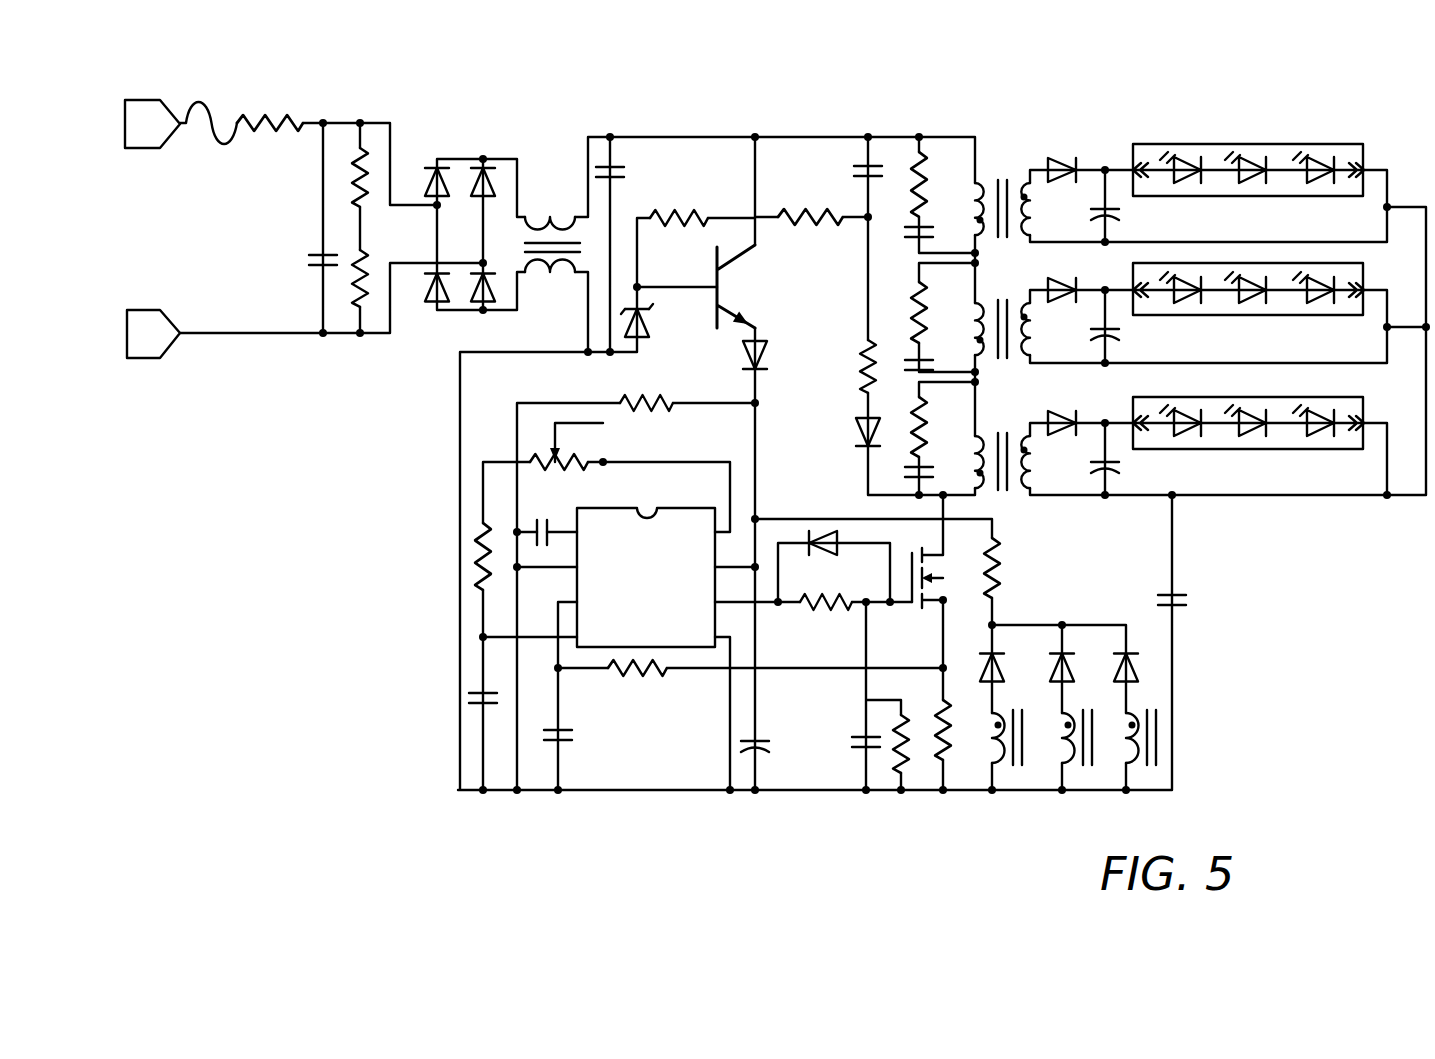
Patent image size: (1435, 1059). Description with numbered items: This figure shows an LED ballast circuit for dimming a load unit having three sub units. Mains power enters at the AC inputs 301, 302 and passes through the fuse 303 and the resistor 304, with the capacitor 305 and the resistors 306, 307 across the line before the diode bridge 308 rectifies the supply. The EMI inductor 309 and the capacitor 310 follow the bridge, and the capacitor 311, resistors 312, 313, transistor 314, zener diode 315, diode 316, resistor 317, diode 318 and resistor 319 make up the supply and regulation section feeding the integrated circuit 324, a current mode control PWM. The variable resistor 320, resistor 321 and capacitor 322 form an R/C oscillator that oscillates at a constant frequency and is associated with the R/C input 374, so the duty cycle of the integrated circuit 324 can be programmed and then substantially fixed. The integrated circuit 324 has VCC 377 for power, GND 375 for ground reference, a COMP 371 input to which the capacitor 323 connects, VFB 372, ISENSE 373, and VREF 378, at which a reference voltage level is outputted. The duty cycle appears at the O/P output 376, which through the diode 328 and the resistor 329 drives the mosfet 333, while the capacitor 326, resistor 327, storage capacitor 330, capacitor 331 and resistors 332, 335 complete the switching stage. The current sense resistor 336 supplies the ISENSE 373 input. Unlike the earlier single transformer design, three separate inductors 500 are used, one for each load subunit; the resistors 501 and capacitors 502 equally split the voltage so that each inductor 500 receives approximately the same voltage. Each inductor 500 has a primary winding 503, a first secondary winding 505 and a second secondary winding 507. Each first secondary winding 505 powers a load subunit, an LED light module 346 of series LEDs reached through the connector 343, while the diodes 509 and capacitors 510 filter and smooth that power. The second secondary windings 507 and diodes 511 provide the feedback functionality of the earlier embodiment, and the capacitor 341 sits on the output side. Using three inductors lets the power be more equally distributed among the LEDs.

The AC input 301 is at (148, 100).
The AC input 302 is at (150, 310).
The fuse 303 is at (205, 105).
The resistor 304 is at (262, 114).
The capacitor 305 is at (312, 258).
The resistor 306 is at (352, 170).
The resistor 307 is at (352, 300).
The diode bridge 308 is at (467, 158).
The EMI inductor 309 is at (550, 225).
The capacitor 310 is at (620, 172).
The capacitor 311 is at (863, 165).
The resistor 312 is at (675, 212).
The resistor 313 is at (830, 212).
The transistor 314 is at (725, 280).
The zener diode 315 is at (650, 322).
The diode 316 is at (768, 350).
The resistor 317 is at (863, 365).
The diode 318 is at (862, 437).
The resistor 319 is at (640, 400).
The variable resistor 320 is at (575, 455).
The resistor 321 is at (480, 545).
The capacitor 322 is at (468, 693).
The capacitor 323 is at (530, 520).
The integrated circuit 324 is at (710, 510).
The capacitor 326 is at (568, 735).
The resistor 327 is at (630, 672).
The diode 328 is at (818, 543).
The resistor 329 is at (805, 605).
The storage capacitor 330 is at (760, 740).
The capacitor 331 is at (860, 750).
The resistor 332 is at (905, 762).
The mosfet 333 is at (930, 560).
The resistor 335 is at (1000, 560).
The current sense resistor 336 is at (945, 745).
The capacitor 341 is at (1185, 589).
The female connector 343 is at (1172, 160).
The LED light module 346 is at (1200, 397).
The COMP 371 is at (598, 520).
The VFB 372 is at (585, 553).
The ISENSE 373 is at (590, 595).
The R/C 374 is at (585, 625).
The GND 375 is at (715, 640).
The O/P 376 is at (742, 598).
The VCC 377 is at (705, 550).
The VREF 378 is at (690, 520).
The inductor 500 is at (858, 62).
The resistor 501 is at (915, 420).
The capacitor 502 is at (905, 478).
The primary winding 503 is at (960, 455).
The first secondary winding 505 is at (1018, 440).
The second secondary winding 507 is at (1135, 770).
The diode 509 is at (1062, 435).
The capacitor 510 is at (1120, 466).
The diode 511 is at (1126, 650).